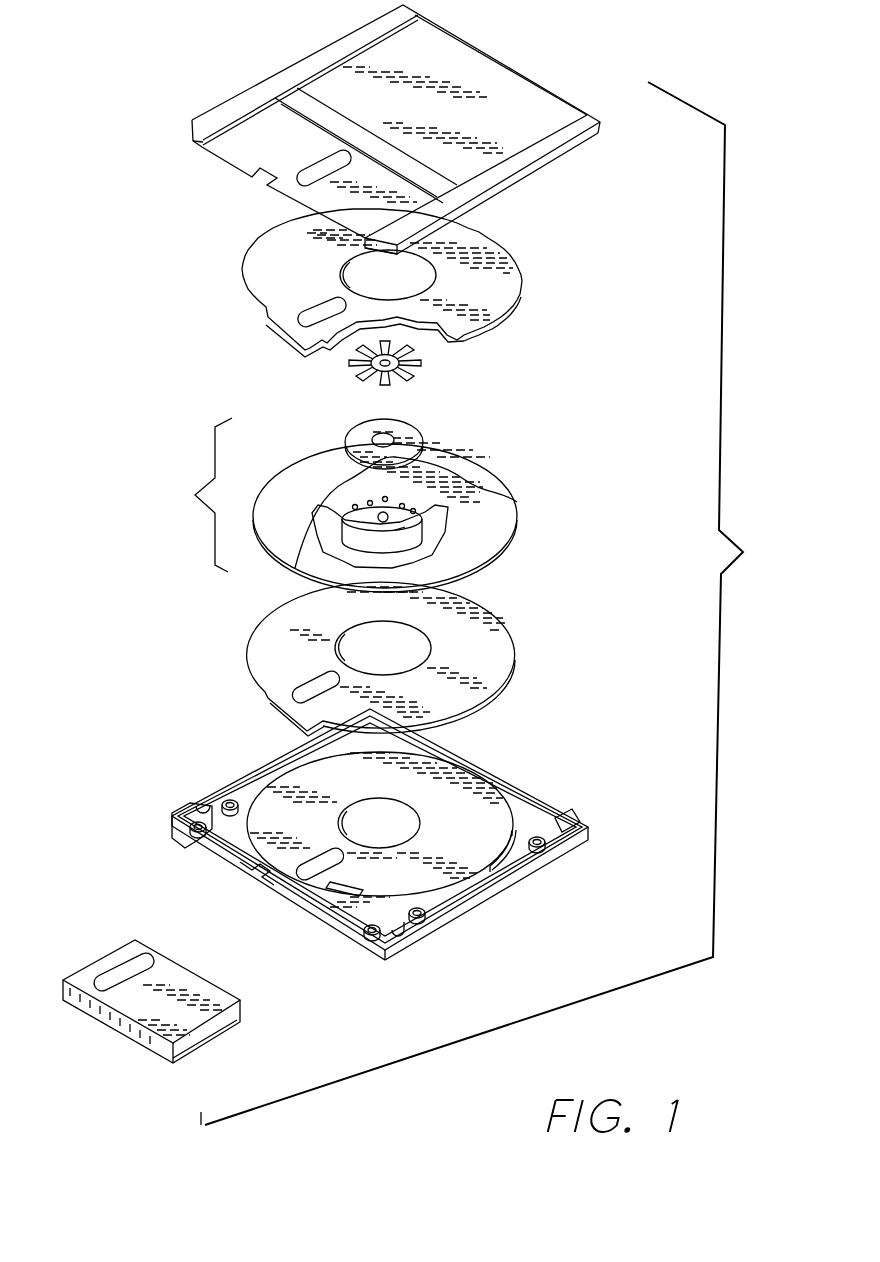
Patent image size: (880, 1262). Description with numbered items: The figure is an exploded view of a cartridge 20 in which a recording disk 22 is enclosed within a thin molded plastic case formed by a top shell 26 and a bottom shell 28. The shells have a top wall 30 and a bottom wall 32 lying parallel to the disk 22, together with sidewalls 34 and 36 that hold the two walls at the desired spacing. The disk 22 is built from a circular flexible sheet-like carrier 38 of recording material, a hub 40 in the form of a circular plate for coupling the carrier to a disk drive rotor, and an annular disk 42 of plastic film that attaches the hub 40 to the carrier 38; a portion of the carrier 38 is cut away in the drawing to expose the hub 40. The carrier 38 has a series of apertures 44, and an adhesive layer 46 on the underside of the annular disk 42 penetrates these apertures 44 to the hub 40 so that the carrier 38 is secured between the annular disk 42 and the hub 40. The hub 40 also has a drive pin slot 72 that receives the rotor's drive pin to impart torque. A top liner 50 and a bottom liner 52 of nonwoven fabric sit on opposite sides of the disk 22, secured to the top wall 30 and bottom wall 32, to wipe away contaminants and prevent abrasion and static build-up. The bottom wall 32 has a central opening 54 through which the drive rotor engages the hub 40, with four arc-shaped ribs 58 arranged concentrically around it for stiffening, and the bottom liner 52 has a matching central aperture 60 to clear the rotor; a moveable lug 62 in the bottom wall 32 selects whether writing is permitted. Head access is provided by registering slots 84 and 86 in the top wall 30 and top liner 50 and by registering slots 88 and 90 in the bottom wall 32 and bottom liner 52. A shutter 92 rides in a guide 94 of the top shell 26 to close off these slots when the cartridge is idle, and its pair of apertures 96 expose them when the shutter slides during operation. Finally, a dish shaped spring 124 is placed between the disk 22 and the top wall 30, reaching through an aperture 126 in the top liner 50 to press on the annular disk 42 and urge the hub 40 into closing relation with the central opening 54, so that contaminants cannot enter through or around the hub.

The cartridge 20 is at (412, 564).
The recording disk 22 is at (382, 502).
The top shell 26 is at (297, 50).
The bottom shell 28 is at (540, 778).
The top wall 30 is at (403, 58).
The bottom wall 32 is at (232, 837).
The sidewall 34 is at (563, 157).
The sidewall 36 is at (512, 887).
The carrier 38 is at (517, 528).
The hub 40 is at (300, 563).
The annular disk 42 is at (417, 425).
The apertures 44 is at (352, 505).
The adhesive layer 46 is at (517, 502).
The top liner 50 is at (500, 250).
The bottom liner 52 is at (517, 660).
The central opening 54 is at (403, 940).
The arc-shaped ribs 58 is at (427, 735).
The central aperture 60 is at (348, 628).
The moveable lug 62 is at (572, 827).
The drive pin slot 72 is at (460, 555).
The slot 84 is at (317, 175).
The slot 86 is at (318, 315).
The slot 88 is at (298, 877).
The slot 90 is at (308, 687).
The shutter 92 is at (102, 952).
The guide 94 is at (257, 140).
The apertures 96 is at (150, 960).
The dish shaped spring 124 is at (423, 363).
The aperture 126 is at (343, 267).